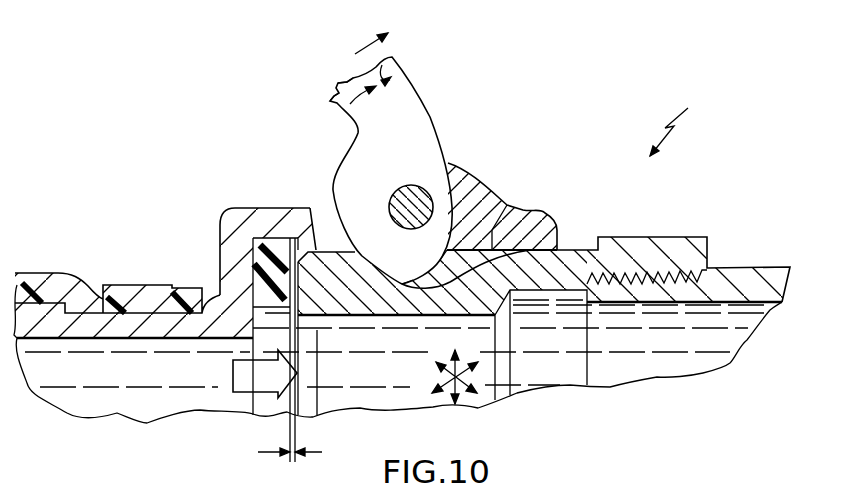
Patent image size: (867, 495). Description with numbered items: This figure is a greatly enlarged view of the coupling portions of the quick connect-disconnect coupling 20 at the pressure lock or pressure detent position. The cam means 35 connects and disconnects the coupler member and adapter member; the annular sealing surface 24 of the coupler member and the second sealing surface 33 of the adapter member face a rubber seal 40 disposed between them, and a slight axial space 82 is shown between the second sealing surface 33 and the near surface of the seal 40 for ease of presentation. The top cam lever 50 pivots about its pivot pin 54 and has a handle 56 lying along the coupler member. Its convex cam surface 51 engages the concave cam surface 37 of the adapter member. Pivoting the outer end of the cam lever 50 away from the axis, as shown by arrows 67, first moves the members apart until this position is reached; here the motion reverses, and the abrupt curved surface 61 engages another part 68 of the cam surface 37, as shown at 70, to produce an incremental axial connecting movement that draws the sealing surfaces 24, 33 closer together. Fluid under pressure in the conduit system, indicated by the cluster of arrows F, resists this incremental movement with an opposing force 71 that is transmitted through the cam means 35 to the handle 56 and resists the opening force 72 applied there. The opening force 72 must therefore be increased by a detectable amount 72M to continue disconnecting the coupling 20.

The quick connect-disconnect coupling 20 is at (680, 120).
The annular sealing surface 24 is at (255, 280).
The second sealing surface 33 is at (278, 245).
The cam means 35 is at (397, 290).
The concave cam surface 37 is at (484, 186).
The seal 40 is at (253, 262).
The cam lever 50 is at (432, 107).
The convex cam surface 51 is at (330, 201).
The pivot pin 54 is at (418, 188).
The handle 56 is at (348, 80).
The abrupt curved surface 61 is at (393, 287).
The arrows 67 is at (368, 43).
The another part of the cam surface 68 is at (445, 277).
The engagement of abrupt curved surface with cam surface 70 is at (412, 291).
The force arrow 71 is at (238, 393).
The opening force 72 is at (338, 98).
The increase in opening force 72M is at (392, 60).
The axial space 82 is at (267, 455).
The cluster of arrows F is at (452, 400).